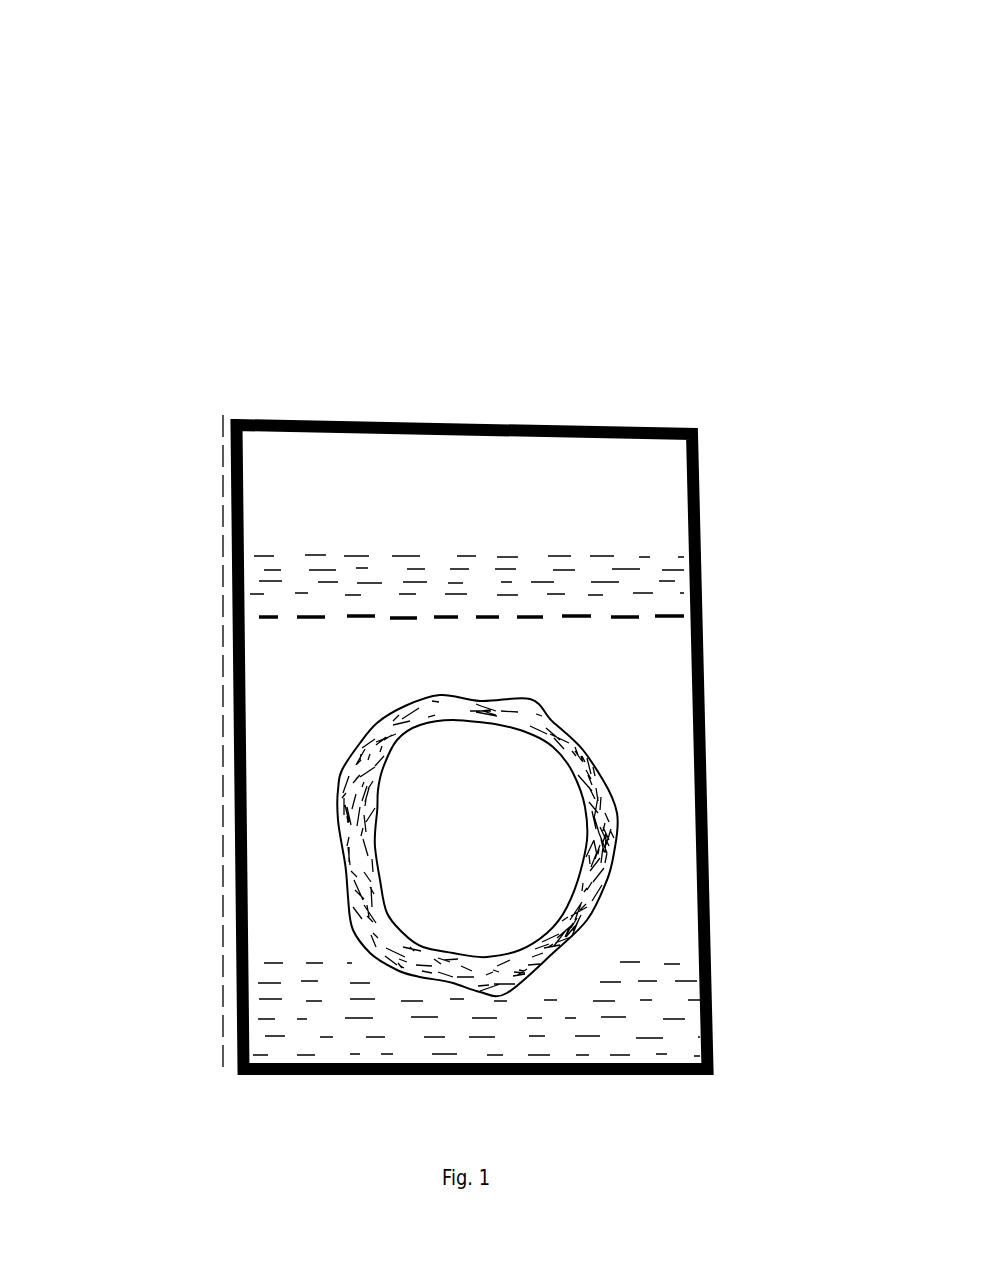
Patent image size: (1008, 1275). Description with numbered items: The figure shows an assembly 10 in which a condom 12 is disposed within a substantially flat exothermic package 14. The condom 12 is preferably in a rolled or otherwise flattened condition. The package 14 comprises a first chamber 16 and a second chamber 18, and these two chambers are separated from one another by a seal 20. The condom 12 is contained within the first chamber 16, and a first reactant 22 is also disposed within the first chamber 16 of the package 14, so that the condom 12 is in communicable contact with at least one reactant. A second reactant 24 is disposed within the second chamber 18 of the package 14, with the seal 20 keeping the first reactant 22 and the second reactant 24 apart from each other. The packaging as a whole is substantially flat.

The assembly 10 is at (292, 167).
The condom 12 is at (610, 808).
The package 14 is at (700, 532).
The first chamber 16 is at (300, 920).
The second chamber 18 is at (553, 478).
The seal 20 is at (445, 610).
The first reactant 22 is at (685, 1027).
The second reactant 24 is at (573, 572).